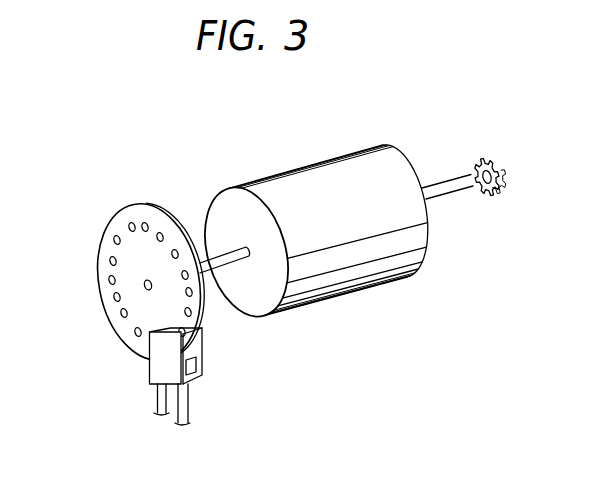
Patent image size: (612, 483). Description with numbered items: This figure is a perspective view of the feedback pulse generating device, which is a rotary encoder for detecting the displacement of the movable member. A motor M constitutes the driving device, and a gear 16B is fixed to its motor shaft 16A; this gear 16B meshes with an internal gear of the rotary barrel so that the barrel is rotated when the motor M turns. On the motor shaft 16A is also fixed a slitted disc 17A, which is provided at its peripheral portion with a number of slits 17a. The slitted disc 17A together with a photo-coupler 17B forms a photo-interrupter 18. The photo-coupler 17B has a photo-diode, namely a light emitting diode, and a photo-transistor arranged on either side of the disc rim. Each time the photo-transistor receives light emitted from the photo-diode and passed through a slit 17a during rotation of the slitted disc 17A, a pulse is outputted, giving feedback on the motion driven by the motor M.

The motor M is at (348, 172).
The motor shaft 16A is at (226, 262).
The gear 16B is at (490, 197).
The slitted disc 17A is at (127, 244).
The slits 17a is at (105, 282).
The photo-coupler 17B is at (150, 363).
The photo-interrupter 18 is at (140, 269).